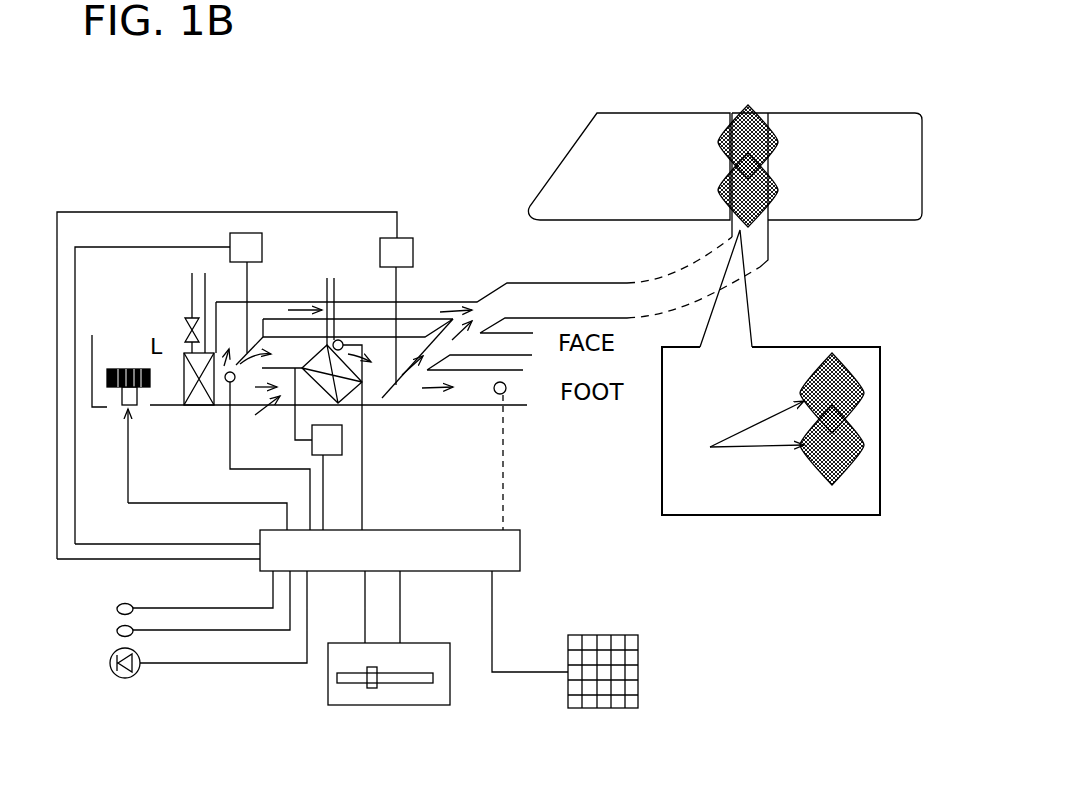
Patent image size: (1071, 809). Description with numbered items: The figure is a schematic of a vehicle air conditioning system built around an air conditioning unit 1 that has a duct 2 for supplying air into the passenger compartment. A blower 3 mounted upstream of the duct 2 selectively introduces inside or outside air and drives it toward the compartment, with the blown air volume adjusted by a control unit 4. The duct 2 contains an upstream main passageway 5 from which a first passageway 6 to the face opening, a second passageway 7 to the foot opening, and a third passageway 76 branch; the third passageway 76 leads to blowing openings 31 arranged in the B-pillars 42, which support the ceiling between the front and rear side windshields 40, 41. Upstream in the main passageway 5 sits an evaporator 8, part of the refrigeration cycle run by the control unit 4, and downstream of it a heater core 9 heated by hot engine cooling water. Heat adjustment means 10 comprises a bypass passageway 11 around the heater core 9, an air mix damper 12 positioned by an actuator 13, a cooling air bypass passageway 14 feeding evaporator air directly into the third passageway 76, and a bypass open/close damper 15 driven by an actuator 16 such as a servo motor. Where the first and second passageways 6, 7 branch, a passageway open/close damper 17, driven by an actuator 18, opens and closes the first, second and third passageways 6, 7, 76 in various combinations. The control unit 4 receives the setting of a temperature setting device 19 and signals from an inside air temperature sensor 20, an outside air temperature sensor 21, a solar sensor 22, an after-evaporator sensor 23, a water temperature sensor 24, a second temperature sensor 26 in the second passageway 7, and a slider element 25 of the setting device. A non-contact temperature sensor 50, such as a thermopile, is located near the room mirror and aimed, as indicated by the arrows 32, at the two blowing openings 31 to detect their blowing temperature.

The air conditioning unit 1 is at (431, 238).
The duct 2 is at (440, 390).
The blower 3 is at (113, 390).
The control unit 4 is at (520, 548).
The main passageway 5 is at (370, 387).
The first passageway 6 is at (513, 342).
The second passageway 7 is at (465, 393).
The evaporator 8 is at (198, 402).
The heater core 9 is at (343, 406).
The heat adjustment means 10 is at (233, 388).
The bypass passageway 11 is at (315, 343).
The air mix damper 12 is at (283, 367).
The actuator 13 is at (342, 447).
The cooling air bypass passageway 14 is at (413, 312).
The bypass open/close damper 15 is at (243, 337).
The actuator 16 is at (263, 250).
The passageway open/close damper 17 is at (413, 388).
The actuator 18 is at (413, 252).
The temperature setting device 19 is at (417, 642).
The inside air temperature sensor 20 is at (117, 608).
The outside air temperature sensor 21 is at (117, 631).
The solar sensor 22 is at (110, 663).
The after-evaporator sensor 23 is at (230, 457).
The water temperature sensor 24 is at (345, 340).
The setting knob 25 is at (380, 667).
The second temperature sensor 26 is at (505, 395).
The blowing openings 31 is at (885, 550).
The arrows 32 is at (740, 428).
The front side windshield 40 is at (612, 143).
The rear side windshield 41 is at (808, 143).
The B-pillar 42 is at (735, 122).
The non-contact temperature sensor 50 is at (598, 698).
The third passageway 76 is at (575, 302).